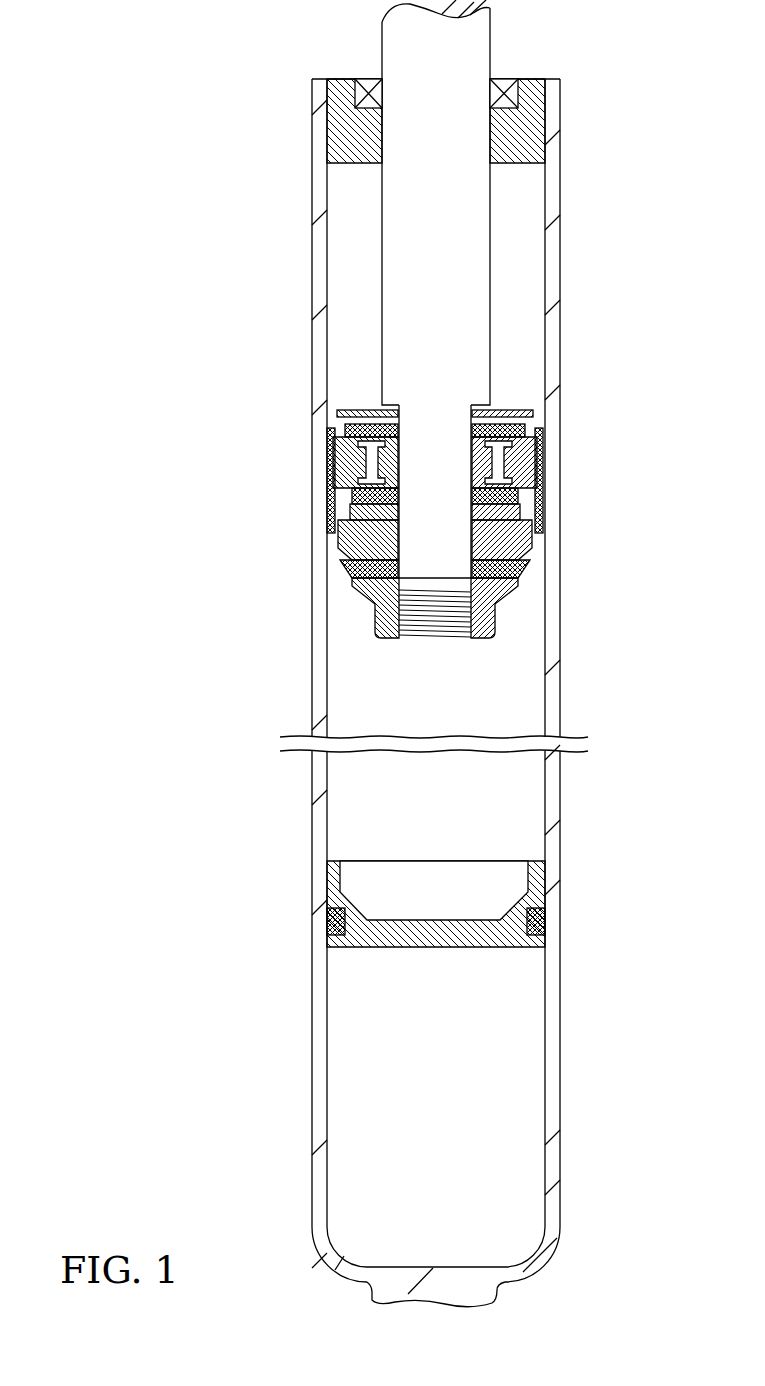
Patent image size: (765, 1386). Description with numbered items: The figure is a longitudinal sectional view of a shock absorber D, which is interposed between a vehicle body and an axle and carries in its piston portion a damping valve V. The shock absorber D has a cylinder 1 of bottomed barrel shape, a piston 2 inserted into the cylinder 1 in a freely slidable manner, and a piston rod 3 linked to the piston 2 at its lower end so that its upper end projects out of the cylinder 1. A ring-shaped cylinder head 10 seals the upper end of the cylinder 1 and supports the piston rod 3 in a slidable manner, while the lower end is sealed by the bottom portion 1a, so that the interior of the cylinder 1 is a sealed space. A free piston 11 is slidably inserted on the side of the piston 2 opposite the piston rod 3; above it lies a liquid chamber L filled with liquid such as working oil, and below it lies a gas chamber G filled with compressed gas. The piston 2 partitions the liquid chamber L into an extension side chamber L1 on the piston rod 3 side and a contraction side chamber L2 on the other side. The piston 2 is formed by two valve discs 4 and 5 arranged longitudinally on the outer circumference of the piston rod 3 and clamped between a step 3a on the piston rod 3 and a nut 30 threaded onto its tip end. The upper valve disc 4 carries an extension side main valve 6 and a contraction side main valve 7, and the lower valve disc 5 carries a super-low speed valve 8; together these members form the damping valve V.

The cylinder 1 is at (568, 818).
The bottom portion 1a is at (447, 1276).
The piston 2 is at (326, 527).
The piston rod 3 is at (494, 44).
The step 3a is at (478, 410).
The valve disc 4 is at (340, 467).
The valve disc 5 is at (548, 549).
The extension side main valve 6 is at (542, 504).
The contraction side main valve 7 is at (536, 414).
The super-low speed valve 8 is at (356, 573).
The cylinder head 10 is at (548, 141).
The free piston 11 is at (330, 883).
The nut 30 is at (506, 639).
The shock absorber D is at (300, 92).
The damping valve V is at (334, 432).
The liquid chamber L is at (348, 705).
The extension side chamber L1 is at (365, 303).
The contraction side chamber L2 is at (457, 714).
The gas chamber G is at (441, 1094).